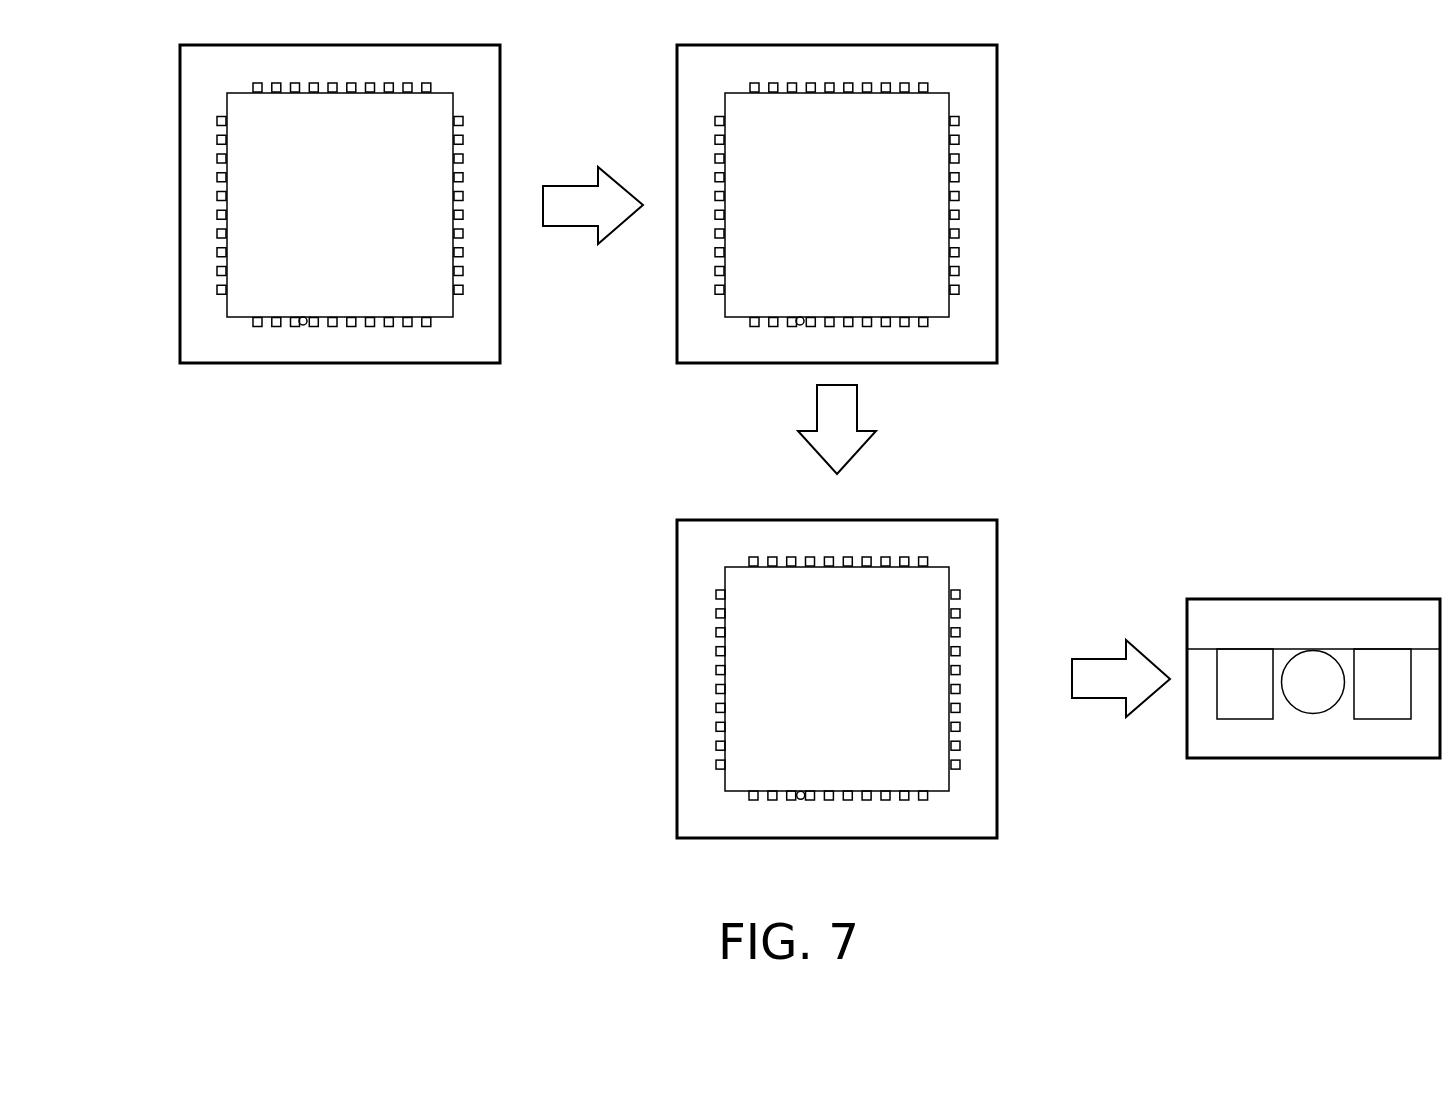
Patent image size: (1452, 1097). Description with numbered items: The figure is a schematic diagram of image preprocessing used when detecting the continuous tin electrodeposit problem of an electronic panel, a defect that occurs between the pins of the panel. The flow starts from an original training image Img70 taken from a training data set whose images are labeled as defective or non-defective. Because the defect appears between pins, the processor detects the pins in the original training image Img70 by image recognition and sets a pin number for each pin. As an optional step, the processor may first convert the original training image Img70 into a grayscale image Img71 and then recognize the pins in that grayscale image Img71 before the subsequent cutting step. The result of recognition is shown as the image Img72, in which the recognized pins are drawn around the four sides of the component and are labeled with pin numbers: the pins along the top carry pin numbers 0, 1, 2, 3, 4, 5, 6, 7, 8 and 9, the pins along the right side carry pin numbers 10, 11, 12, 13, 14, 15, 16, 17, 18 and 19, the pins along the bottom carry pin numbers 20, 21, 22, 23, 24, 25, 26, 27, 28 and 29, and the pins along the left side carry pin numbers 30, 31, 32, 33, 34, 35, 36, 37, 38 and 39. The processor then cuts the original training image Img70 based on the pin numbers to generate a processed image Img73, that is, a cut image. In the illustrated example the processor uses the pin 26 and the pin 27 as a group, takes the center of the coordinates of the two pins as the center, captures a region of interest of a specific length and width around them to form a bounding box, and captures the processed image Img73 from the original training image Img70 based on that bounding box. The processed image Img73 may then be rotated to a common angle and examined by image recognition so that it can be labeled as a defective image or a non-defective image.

The original training image Img70 is at (195, 192).
The grayscale image Img71 is at (985, 190).
The image showing recognized pins and pin numbers Img72 is at (985, 530).
The processed image Img73 is at (1314, 598).
The pin number 0 is at (754, 556).
The pin number 1 is at (772, 556).
The pin number 2 is at (791, 556).
The pin number 3 is at (810, 556).
The pin number 4 is at (829, 556).
The pin number 5 is at (848, 556).
The pin number 6 is at (867, 556).
The pin number 7 is at (886, 556).
The pin number 8 is at (904, 556).
The pin number 9 is at (923, 556).
The pin number 10 is at (961, 594).
The pin number 11 is at (961, 613).
The pin number 12 is at (961, 632).
The pin number 13 is at (961, 651).
The pin number 14 is at (961, 670).
The pin number 15 is at (961, 689).
The pin number 16 is at (961, 708).
The pin number 17 is at (961, 727).
The pin number 18 is at (961, 746).
The pin number 19 is at (961, 765).
The pin number 20 is at (923, 801).
The pin number 21 is at (904, 801).
The pin number 22 is at (886, 801).
The pin number 23 is at (867, 801).
The pin number 24 is at (848, 801).
The pin number 25 is at (829, 801).
The pin 26 is at (810, 801).
The pin 27 is at (791, 801).
The pin number 28 is at (772, 801).
The pin number 29 is at (754, 801).
The pin number 30 is at (716, 765).
The pin number 31 is at (716, 746).
The pin number 32 is at (716, 727).
The pin number 33 is at (716, 708).
The pin number 34 is at (716, 689).
The pin number 35 is at (716, 670).
The pin number 36 is at (716, 651).
The pin number 37 is at (716, 632).
The pin number 38 is at (716, 613).
The pin number 39 is at (716, 594).